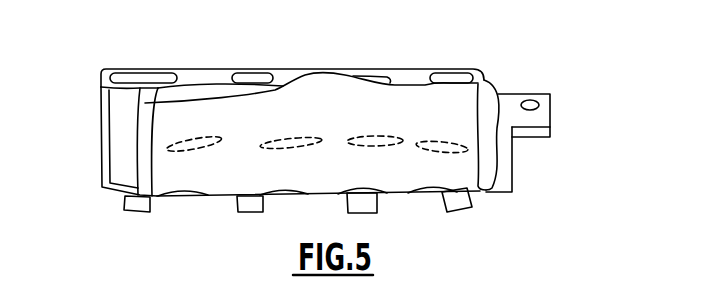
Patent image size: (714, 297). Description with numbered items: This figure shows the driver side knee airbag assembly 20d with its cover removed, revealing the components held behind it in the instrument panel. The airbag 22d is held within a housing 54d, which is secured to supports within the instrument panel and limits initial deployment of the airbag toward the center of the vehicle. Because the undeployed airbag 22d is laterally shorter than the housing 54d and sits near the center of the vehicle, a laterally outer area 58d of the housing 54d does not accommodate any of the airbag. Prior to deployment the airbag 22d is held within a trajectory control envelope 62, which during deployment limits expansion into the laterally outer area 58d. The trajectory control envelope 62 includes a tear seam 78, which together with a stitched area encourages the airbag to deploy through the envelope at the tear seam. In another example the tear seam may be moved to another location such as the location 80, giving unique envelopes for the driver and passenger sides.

The knee airbag assembly 20d is at (519, 66).
The airbag 22d is at (488, 148).
The housing 54d is at (533, 114).
The laterally outer area 58d is at (125, 135).
The trajectory control envelope 62 is at (455, 167).
The tear seam 78 is at (189, 200).
The location 80 is at (443, 138).